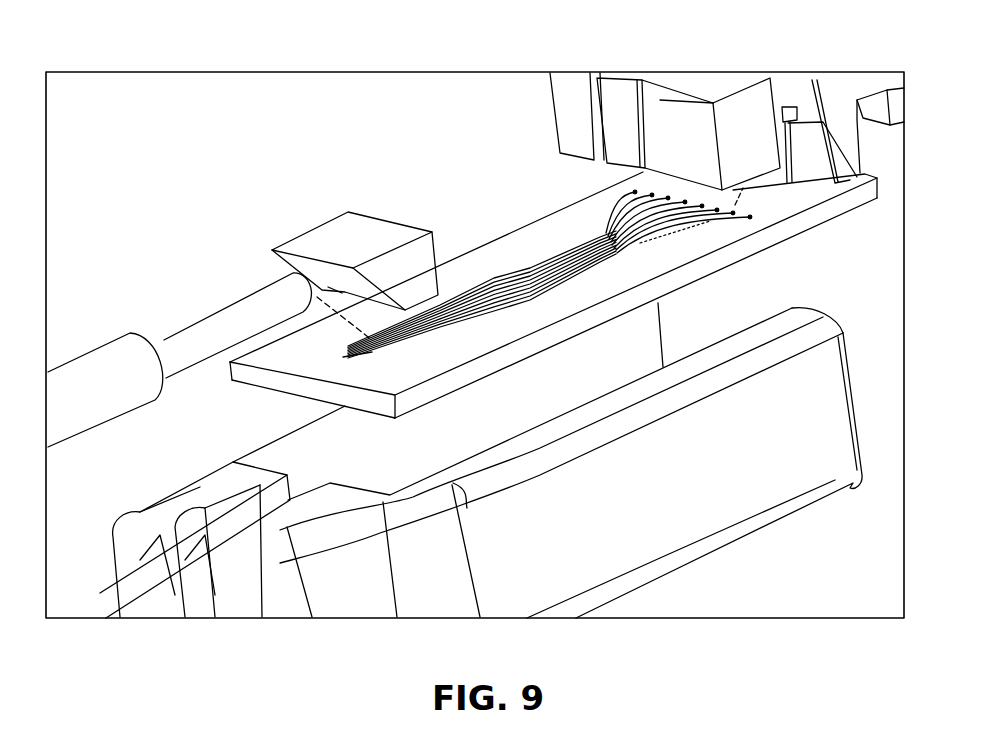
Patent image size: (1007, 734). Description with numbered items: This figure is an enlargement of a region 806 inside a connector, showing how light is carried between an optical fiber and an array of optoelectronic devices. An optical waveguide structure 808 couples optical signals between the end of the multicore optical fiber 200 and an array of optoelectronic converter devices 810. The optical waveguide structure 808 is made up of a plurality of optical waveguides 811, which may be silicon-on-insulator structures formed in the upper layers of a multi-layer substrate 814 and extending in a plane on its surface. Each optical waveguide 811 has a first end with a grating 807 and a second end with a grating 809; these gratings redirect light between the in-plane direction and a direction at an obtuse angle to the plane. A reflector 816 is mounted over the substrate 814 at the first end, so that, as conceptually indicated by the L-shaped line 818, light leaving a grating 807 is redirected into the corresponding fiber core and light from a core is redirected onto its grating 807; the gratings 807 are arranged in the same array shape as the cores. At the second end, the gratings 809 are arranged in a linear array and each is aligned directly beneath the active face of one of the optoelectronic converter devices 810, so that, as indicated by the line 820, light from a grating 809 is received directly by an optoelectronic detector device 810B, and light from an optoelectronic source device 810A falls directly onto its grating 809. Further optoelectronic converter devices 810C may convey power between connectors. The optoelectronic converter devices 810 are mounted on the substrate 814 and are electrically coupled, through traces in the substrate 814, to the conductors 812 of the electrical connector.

The multicore optical fiber 200 is at (188, 318).
The region 806 is at (352, 72).
The gratings 807 is at (368, 362).
The optical waveguide structure 808 is at (494, 276).
The gratings 809 is at (705, 228).
The optoelectronic converter devices 810 is at (608, 109).
The optoelectronic source devices 810A is at (548, 98).
The optoelectronic detector devices 810B is at (612, 82).
The optoelectronic converter devices 810C is at (693, 103).
The optical waveguides 811 is at (700, 237).
The conductors 812 is at (786, 112).
The substrate 814 is at (748, 220).
The reflector 816 is at (305, 233).
The L-shaped line 818 is at (322, 328).
The line 820 is at (780, 208).